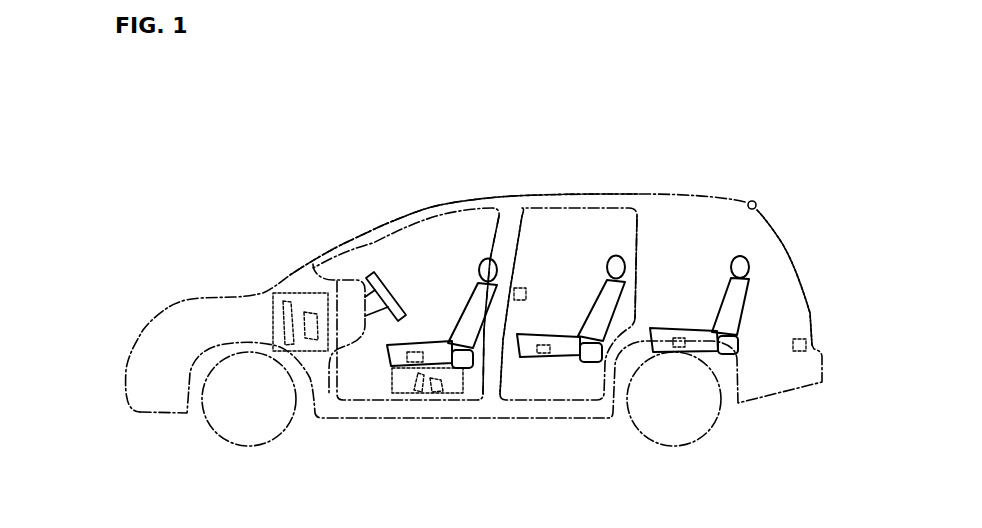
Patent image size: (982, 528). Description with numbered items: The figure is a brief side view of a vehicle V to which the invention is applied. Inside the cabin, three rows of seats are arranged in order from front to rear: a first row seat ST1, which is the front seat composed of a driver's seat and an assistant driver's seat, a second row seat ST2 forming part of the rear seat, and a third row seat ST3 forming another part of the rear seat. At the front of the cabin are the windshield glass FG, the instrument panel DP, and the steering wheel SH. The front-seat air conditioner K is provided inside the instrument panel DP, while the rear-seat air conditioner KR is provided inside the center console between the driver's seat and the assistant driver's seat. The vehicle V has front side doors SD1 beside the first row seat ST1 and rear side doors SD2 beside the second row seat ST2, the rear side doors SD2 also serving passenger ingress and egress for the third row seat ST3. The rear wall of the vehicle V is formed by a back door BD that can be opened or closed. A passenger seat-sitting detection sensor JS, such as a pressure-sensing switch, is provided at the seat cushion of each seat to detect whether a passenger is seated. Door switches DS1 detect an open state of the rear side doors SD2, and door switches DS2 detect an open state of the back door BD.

The vehicle V is at (407, 113).
The windshield glass FG is at (375, 228).
The instrument panel DP is at (352, 278).
The steering wheel SH is at (390, 276).
The front-seat air conditioner K is at (310, 317).
The front side door SD1 is at (450, 202).
The door switch DS1 is at (528, 288).
The rear side door SD2 is at (606, 196).
The back door BD is at (796, 251).
The first row seat ST1 is at (456, 295).
The second row seat ST2 is at (583, 287).
The third row seat ST3 is at (700, 304).
The passenger detection sensor JS is at (387, 360).
The rear-seat air conditioner KR is at (457, 392).
The door switch DS2 is at (799, 352).